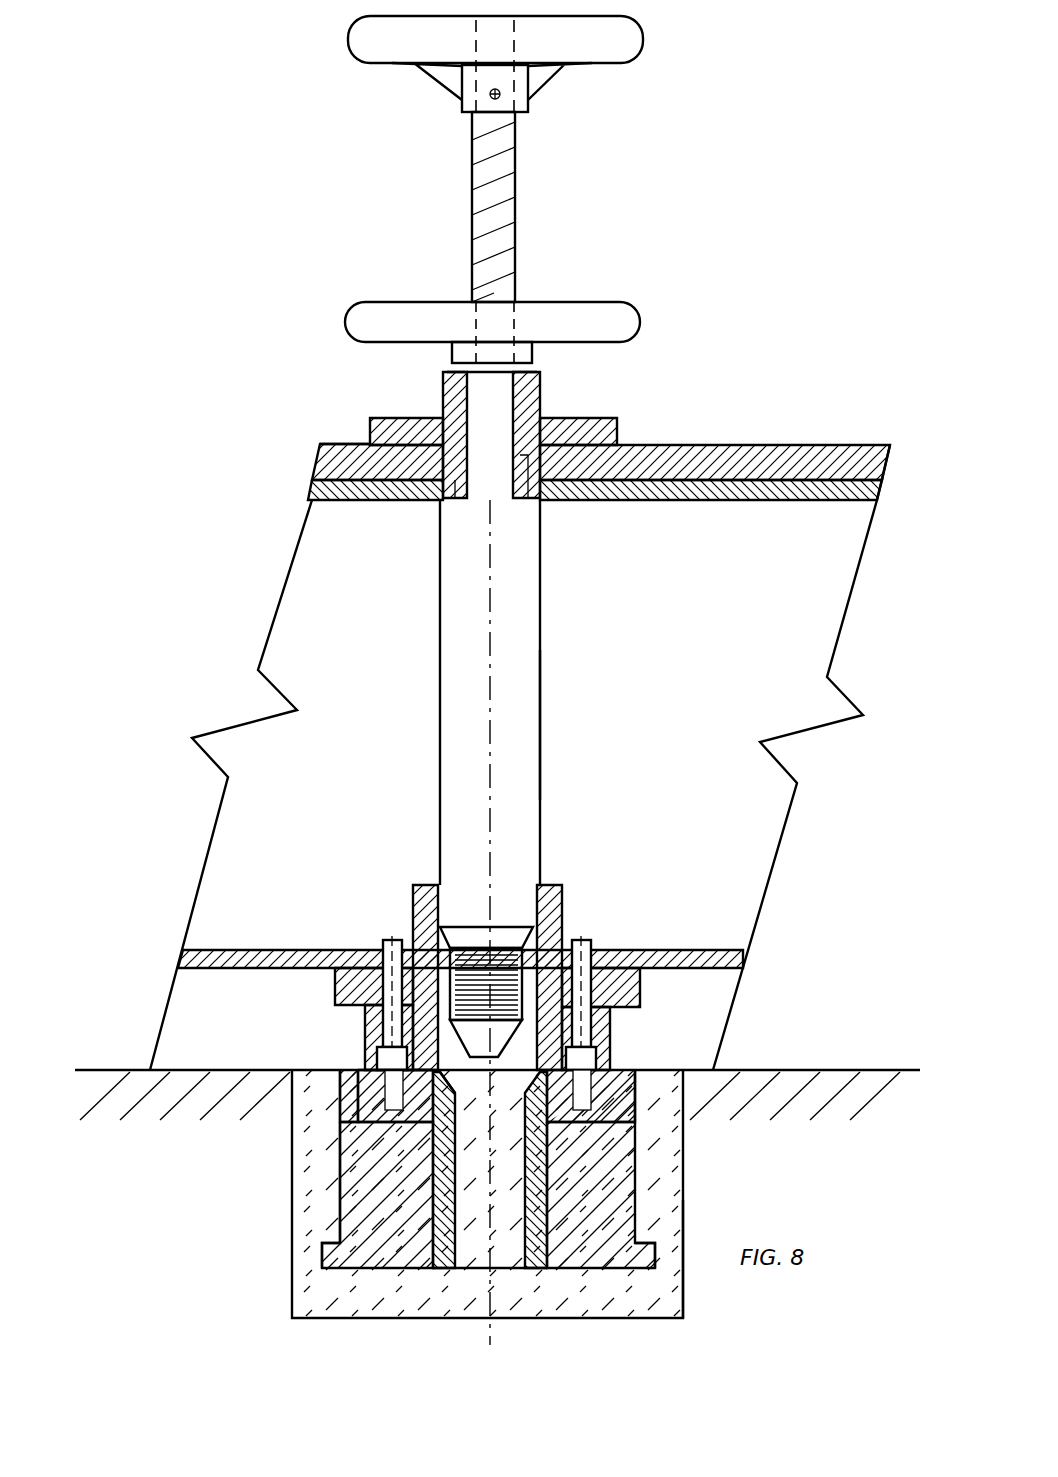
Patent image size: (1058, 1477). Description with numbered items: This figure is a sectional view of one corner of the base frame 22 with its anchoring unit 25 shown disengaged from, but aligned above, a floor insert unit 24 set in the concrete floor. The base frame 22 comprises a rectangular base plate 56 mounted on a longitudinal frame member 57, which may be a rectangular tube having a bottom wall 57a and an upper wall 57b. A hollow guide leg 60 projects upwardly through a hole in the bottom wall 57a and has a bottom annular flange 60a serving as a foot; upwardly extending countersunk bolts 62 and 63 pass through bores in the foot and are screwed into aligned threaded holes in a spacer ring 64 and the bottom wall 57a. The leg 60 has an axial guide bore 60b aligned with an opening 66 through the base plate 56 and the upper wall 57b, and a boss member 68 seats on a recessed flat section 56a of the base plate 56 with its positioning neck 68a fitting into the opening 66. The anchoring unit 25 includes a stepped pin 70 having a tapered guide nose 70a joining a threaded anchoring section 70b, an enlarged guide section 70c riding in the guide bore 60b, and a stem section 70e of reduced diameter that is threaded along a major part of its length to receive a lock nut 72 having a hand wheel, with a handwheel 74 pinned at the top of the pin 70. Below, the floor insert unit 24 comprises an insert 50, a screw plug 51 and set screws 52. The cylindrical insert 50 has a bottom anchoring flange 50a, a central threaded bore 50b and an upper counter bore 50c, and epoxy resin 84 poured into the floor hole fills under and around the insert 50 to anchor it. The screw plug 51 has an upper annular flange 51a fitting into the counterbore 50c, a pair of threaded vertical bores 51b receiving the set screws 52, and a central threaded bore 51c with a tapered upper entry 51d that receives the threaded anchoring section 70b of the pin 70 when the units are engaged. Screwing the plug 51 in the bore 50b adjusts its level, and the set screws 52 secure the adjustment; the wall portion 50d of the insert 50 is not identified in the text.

The handwheel 74 is at (620, 50).
The anchoring unit 25 is at (450, 180).
The stem section 70e is at (515, 262).
The lock nut 72 is at (575, 333).
The boss member 68 is at (530, 415).
The positioning neck 68a is at (524, 498).
The opening 66 is at (455, 498).
The base plate 56 is at (672, 452).
The recessed flat section 56a is at (335, 442).
The upper wall 57b is at (748, 500).
The base frame 22 is at (800, 443).
The longitudinal frame member 57 is at (285, 610).
The stepped pin 70 is at (440, 633).
The enlarged guide section 70c is at (530, 722).
The bottom wall 57a is at (243, 950).
The hollow guide leg 60 is at (560, 895).
The spacer ring 64 is at (337, 985).
The bottom annular flange 60a is at (372, 1040).
The axial guide bore 60b is at (545, 1078).
The countersunk bolt 62 is at (388, 940).
The bore 63 is at (590, 1040).
The threaded anchoring section 70b is at (500, 948).
The tapered guide nose 70a is at (480, 1057).
The floor insert unit 24 is at (640, 1195).
The epoxy resin 84 is at (683, 1290).
The insert 50 is at (350, 1190).
The upper counter bore 50c is at (340, 1105).
The set screw 52 is at (630, 1112).
The upper annular flange 51a is at (620, 1140).
The socket wall 50d is at (340, 1140).
The bottom anchoring flange 50a is at (325, 1258).
The threaded vertical bore 51b is at (360, 1077).
The screw plug 51 is at (440, 1270).
The tapered upper entry 51d is at (455, 1093).
The central threaded bore 51c is at (470, 1270).
The central threaded bore 50b is at (515, 1270).